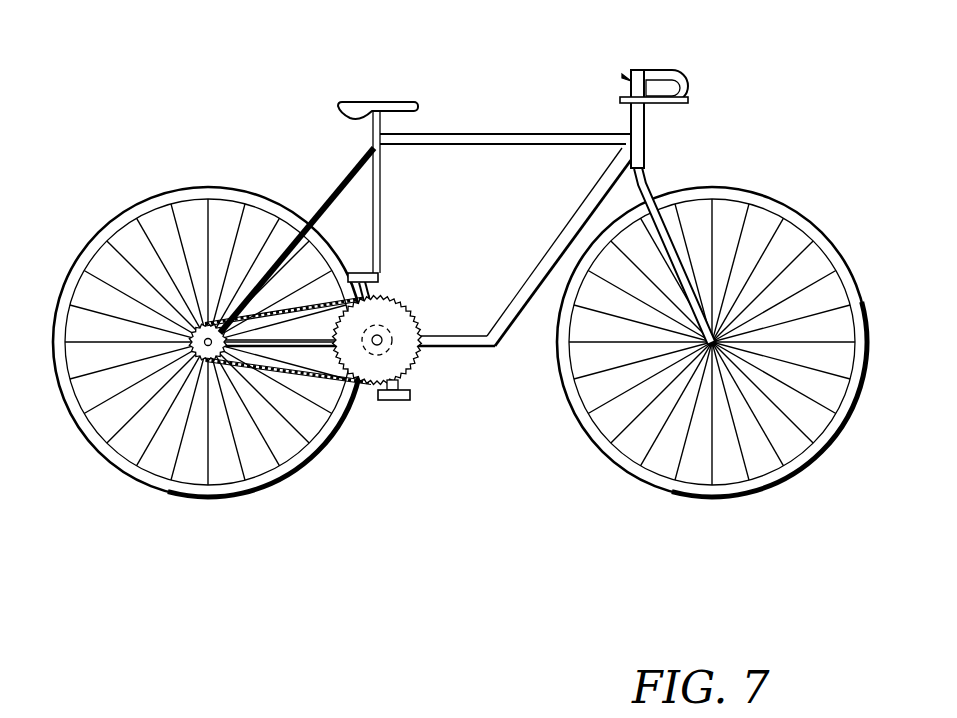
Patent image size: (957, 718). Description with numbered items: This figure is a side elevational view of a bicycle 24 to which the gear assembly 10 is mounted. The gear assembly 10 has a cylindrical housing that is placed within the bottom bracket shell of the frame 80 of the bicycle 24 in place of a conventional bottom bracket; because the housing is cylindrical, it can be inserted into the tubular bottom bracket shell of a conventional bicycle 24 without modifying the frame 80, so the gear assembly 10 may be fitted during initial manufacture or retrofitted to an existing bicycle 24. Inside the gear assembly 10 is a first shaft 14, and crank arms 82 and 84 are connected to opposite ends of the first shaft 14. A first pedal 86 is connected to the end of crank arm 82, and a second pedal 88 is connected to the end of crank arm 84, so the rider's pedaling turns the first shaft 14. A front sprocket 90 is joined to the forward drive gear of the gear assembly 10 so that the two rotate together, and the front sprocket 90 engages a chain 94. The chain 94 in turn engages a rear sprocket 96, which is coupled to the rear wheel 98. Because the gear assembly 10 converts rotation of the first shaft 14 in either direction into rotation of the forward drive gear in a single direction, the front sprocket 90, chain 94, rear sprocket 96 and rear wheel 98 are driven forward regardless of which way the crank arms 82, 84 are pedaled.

The gear assembly 10 is at (393, 350).
The first shaft 14 is at (412, 305).
The bicycle 24 is at (670, 163).
The frame 80 is at (513, 298).
The crank arm 82 is at (387, 290).
The crank arm 84 is at (398, 383).
The first pedal 86 is at (360, 267).
The second pedal 88 is at (377, 400).
The front sprocket 90 is at (405, 322).
The chain 94 is at (280, 307).
The rear sprocket 96 is at (205, 353).
The rear wheel 98 is at (103, 253).